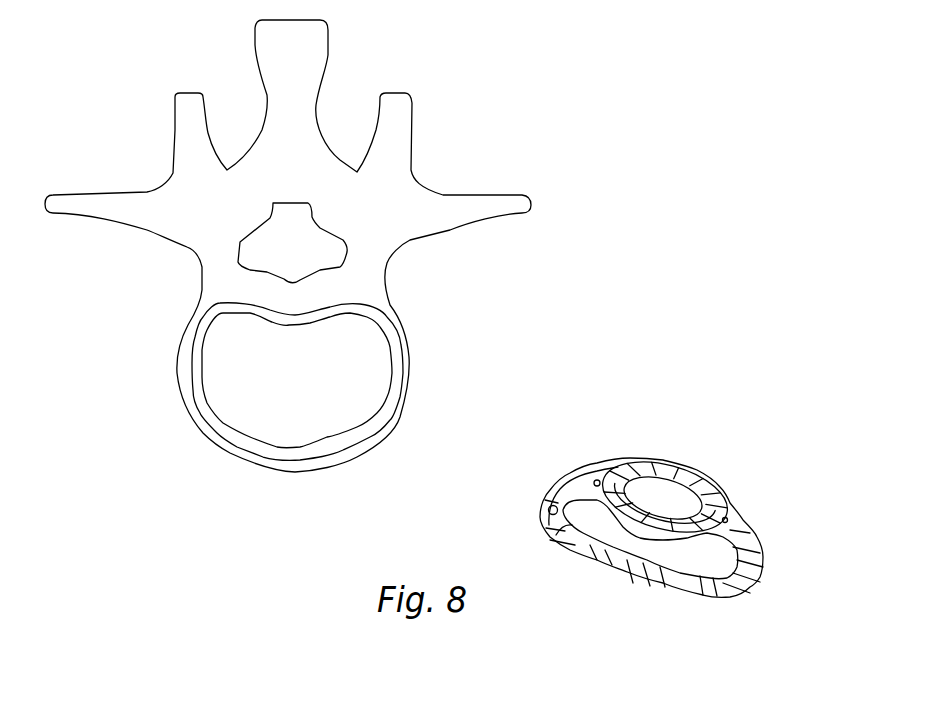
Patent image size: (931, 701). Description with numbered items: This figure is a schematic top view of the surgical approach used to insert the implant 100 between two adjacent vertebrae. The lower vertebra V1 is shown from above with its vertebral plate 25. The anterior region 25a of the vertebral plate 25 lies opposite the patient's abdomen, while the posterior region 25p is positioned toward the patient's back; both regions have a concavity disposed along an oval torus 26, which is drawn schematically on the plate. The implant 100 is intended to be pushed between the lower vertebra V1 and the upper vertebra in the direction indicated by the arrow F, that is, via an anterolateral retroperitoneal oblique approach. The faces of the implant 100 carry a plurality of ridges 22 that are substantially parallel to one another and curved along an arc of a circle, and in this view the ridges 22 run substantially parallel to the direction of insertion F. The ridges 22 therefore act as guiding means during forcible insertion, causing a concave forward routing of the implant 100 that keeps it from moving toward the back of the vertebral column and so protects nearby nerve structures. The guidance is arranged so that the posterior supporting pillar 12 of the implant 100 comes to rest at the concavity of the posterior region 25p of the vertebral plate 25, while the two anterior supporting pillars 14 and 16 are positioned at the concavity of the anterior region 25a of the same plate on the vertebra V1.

The vertebra V1 is at (146, 275).
The vertebral plate 25 is at (358, 368).
The posterior region of the vertebral plate 25p is at (333, 338).
The anterior region of the vertebral plate 25a is at (280, 417).
The oval torus 26 is at (193, 406).
The direction of insertion F is at (443, 434).
The implant 100 is at (642, 532).
The supporting pillar 12 is at (658, 468).
The supporting pillar 14 is at (537, 514).
The supporting pillar 16 is at (724, 599).
The ridges 22 is at (550, 547).